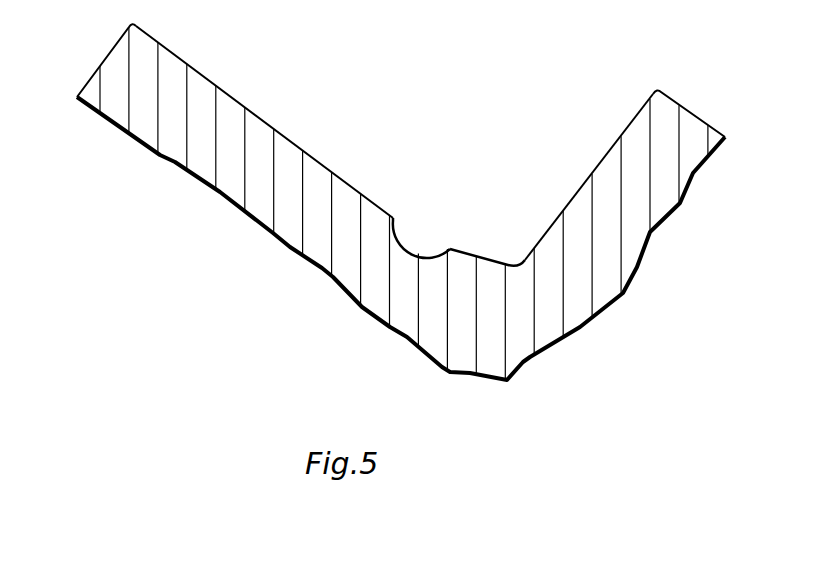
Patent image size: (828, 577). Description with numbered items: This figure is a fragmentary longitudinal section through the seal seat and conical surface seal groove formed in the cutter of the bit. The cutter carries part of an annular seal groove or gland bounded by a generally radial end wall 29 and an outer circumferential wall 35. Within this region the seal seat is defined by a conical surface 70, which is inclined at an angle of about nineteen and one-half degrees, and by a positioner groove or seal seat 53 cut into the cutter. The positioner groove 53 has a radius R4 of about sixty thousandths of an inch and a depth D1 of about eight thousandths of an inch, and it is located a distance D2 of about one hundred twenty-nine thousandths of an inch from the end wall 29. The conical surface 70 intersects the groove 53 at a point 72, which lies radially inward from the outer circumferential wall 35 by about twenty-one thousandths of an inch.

The outer circumferential wall 35 is at (284, 132).
The end wall 29 is at (609, 150).
The positioner groove 53 is at (394, 217).
The point 72 is at (450, 247).
The conical surface 70 is at (474, 255).
The depth D1 is at (393, 242).
The distance D2 is at (428, 222).
The radius R4 is at (435, 215).